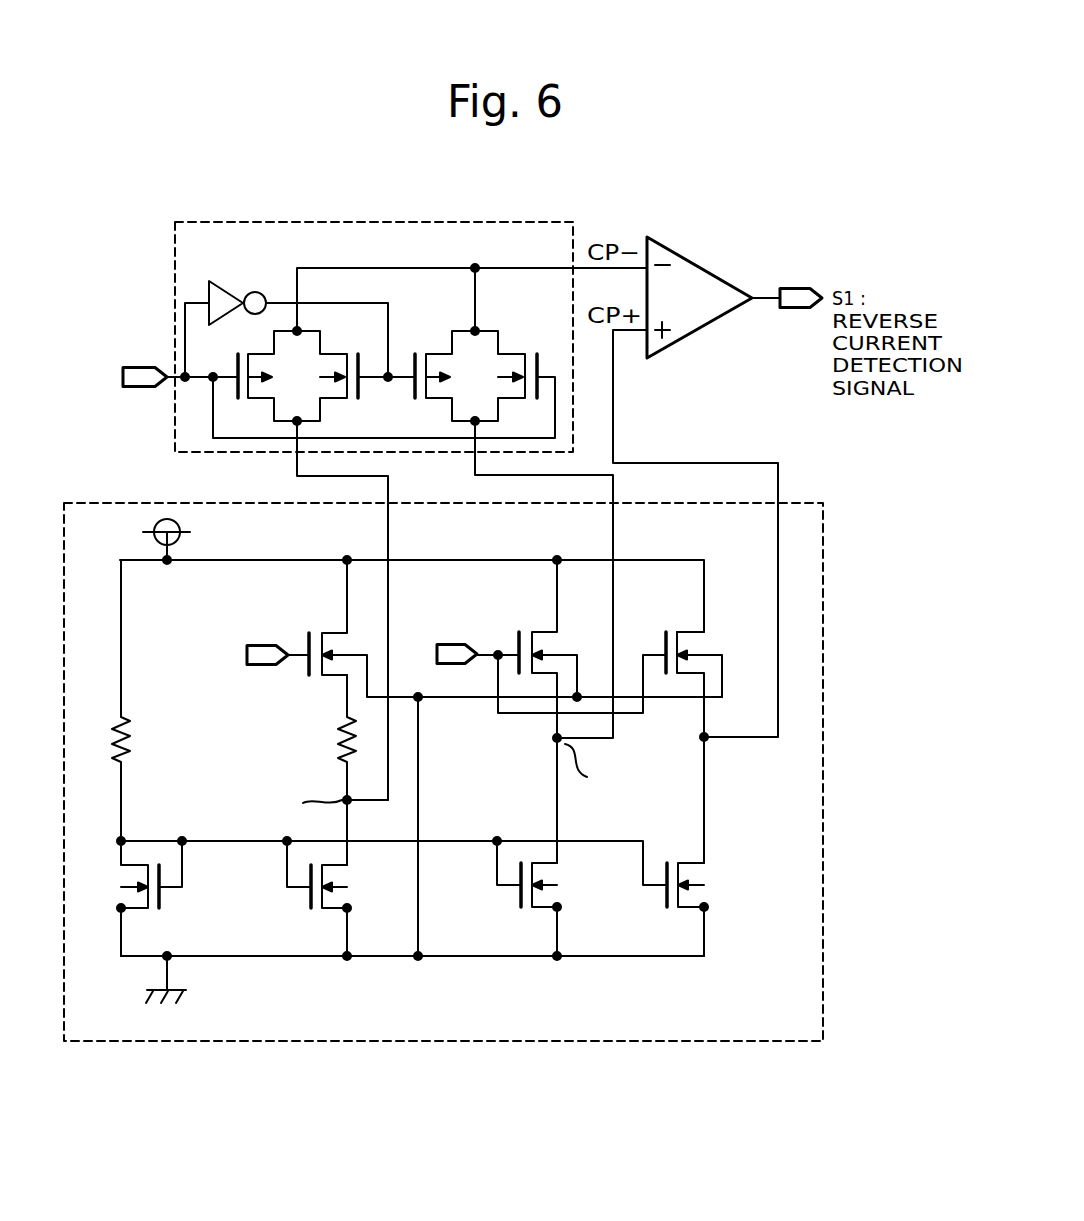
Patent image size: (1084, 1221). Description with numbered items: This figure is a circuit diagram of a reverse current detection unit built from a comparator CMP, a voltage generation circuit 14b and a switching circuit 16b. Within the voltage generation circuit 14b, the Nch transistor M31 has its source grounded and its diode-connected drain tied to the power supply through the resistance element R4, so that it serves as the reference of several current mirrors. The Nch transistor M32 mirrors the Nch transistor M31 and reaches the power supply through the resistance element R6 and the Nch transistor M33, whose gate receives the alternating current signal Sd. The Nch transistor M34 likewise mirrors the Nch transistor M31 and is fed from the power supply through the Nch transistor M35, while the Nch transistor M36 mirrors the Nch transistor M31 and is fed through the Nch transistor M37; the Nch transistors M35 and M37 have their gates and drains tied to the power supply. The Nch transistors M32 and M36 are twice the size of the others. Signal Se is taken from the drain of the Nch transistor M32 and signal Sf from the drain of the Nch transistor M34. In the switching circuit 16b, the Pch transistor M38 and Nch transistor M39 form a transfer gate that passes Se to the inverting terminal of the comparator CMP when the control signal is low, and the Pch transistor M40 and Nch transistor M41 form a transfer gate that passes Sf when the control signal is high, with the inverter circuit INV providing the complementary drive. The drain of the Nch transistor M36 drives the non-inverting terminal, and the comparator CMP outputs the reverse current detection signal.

The switching circuit 16b is at (437, 222).
The voltage generation circuit 14b is at (810, 502).
The inverter circuit INV is at (286, 318).
The comparator CMP is at (699, 298).
The Nch transistor M31 is at (129, 898).
The Nch transistor M32 is at (311, 898).
The Nch transistor M33 is at (505, 634).
The Nch transistor M34 is at (526, 898).
The Nch transistor M35 is at (539, 711).
The Nch transistor M36 is at (674, 909).
The Nch transistor M37 is at (685, 733).
The Pch transistor M38 is at (261, 380).
The Nch transistor M39 is at (336, 380).
The Pch transistor M40 is at (439, 380).
The Nch transistor M41 is at (514, 370).
The resistance element R4 is at (141, 700).
The resistance element R6 is at (329, 770).